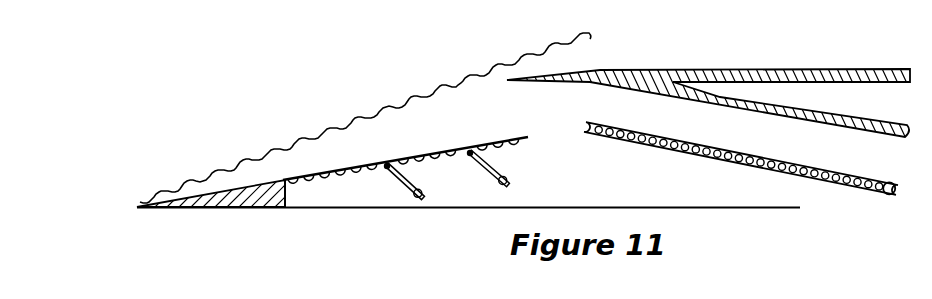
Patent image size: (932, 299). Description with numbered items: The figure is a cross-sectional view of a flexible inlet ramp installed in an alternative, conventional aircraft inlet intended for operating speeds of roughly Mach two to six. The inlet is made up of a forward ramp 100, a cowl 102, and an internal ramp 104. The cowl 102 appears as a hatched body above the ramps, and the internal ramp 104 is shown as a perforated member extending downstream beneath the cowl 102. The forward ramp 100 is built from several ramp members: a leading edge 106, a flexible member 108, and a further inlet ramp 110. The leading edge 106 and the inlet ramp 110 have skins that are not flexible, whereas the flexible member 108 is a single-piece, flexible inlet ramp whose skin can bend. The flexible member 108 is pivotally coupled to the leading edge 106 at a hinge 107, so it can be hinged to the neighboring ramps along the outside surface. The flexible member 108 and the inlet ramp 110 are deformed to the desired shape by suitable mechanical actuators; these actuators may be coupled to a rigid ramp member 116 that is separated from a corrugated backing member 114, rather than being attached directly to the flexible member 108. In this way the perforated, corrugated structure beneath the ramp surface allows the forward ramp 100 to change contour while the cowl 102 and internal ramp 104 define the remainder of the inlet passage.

The forward ramp 100 is at (277, 140).
The cowl 102 is at (656, 68).
The internal ramp 104 is at (713, 152).
The leading edge 106 is at (152, 193).
The hinge 107 is at (285, 210).
The flexible member 108 is at (393, 152).
The inlet ramp 110 is at (486, 138).
The corrugated backing member 114 is at (348, 176).
The rigid ramp member 116 is at (349, 168).